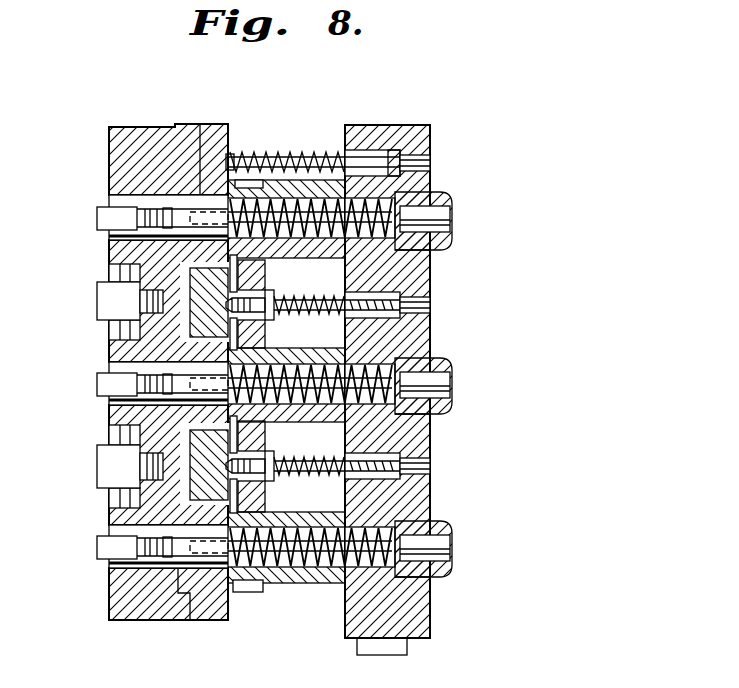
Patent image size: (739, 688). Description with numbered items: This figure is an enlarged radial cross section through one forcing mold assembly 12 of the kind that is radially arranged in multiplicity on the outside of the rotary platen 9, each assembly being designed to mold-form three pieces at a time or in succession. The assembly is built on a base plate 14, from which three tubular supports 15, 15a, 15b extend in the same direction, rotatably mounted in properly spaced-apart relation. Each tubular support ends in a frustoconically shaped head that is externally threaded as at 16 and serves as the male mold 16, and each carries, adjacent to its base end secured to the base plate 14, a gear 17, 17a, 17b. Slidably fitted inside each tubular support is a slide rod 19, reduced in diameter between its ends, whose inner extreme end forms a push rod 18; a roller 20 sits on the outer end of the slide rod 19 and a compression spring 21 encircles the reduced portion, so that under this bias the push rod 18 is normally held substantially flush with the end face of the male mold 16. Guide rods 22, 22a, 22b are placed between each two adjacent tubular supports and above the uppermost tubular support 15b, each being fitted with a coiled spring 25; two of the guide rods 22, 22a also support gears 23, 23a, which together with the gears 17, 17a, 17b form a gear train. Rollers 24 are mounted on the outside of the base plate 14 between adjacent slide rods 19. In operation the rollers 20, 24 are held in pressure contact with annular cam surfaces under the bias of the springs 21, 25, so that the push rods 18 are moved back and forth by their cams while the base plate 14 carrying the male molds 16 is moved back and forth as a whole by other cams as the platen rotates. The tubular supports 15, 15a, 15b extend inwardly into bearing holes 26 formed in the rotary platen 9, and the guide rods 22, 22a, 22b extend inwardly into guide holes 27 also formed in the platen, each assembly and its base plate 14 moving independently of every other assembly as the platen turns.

The rotary platen 9 is at (426, 125).
The forcing mold assembly 12 is at (170, 649).
The base plate 14 is at (145, 140).
The tubular support 15 is at (290, 583).
The tubular support 15a is at (322, 356).
The tubular support 15b is at (290, 180).
The male mold 16 is at (440, 195).
The gear 17 is at (250, 593).
The gear 17a is at (230, 440).
The gear 17b is at (244, 178).
The push rod 18 is at (442, 219).
The slide rod 19 is at (115, 193).
The roller 20 is at (96, 217).
The compression spring 21 is at (335, 246).
The guide rod 22 is at (347, 455).
The guide rod 22a is at (350, 292).
The guide rod 22b is at (270, 150).
The gear 23 is at (262, 442).
The gear 23a is at (262, 326).
The roller 24 is at (110, 297).
The coiled spring 25 is at (326, 150).
The bearing hole 26 is at (430, 258).
The guide hole 27 is at (420, 161).